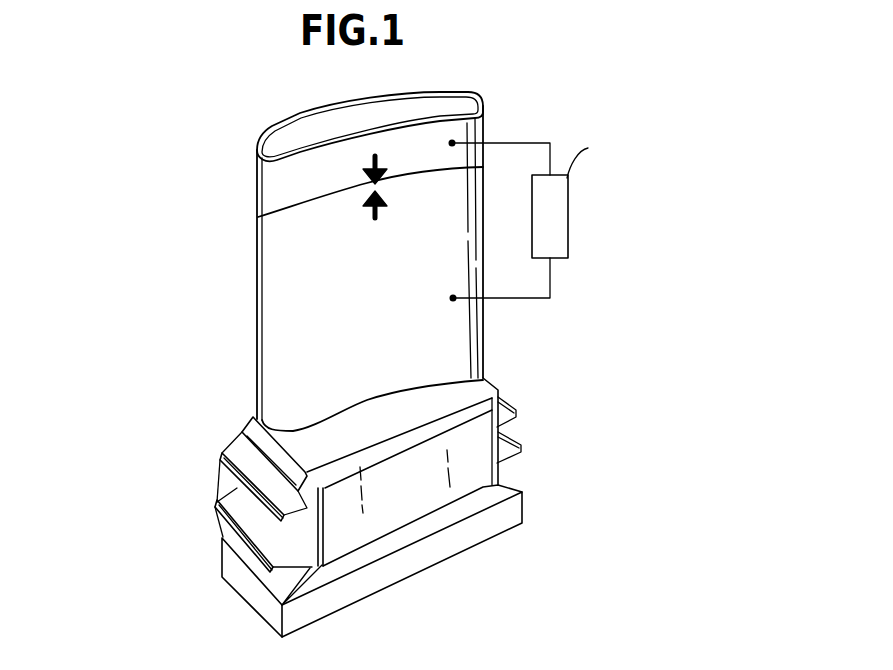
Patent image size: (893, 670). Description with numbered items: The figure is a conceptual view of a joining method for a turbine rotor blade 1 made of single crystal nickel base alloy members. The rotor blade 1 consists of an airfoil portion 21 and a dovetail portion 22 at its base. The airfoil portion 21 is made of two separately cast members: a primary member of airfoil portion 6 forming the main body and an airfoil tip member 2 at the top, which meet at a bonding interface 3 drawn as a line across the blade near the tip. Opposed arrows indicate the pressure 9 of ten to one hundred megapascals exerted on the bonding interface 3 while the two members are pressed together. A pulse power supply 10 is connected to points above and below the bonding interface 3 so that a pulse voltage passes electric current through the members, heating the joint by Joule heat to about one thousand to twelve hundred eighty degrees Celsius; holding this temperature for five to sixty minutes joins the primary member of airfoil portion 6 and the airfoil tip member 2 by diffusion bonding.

The rotor blade 1 is at (229, 330).
The airfoil tip member 2 is at (271, 193).
The bonding interface 3 is at (278, 219).
The primary member of airfoil portion 6 is at (278, 383).
The pressure 9 is at (385, 202).
The pulse power supply 10 is at (569, 215).
The airfoil portion 21 is at (432, 340).
The dovetail portion 22 is at (410, 493).